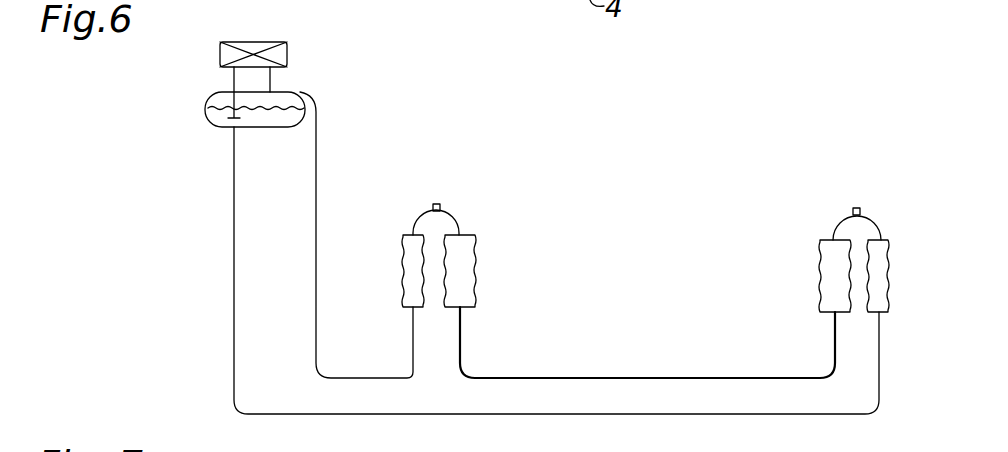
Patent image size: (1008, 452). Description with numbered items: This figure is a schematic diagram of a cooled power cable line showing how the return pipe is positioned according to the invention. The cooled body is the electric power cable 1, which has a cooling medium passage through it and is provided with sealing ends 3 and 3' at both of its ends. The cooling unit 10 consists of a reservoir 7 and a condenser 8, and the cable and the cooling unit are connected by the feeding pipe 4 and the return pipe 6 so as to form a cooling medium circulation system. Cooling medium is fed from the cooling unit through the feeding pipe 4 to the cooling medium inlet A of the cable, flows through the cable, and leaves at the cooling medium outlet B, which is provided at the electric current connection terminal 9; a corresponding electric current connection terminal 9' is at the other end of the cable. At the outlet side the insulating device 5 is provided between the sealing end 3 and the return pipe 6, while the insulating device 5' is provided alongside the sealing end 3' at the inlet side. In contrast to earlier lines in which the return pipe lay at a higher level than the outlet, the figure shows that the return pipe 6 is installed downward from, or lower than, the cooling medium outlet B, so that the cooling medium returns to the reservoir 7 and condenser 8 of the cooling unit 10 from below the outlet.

The electric power cable 1 is at (645, 378).
The sealing end 3 is at (488, 271).
The sealing end 3' is at (799, 276).
The feeding pipe 4 is at (630, 414).
The insulating device 5 is at (383, 271).
The insulating device 5' is at (893, 300).
The return pipe 6 is at (368, 378).
The reservoir 7 is at (236, 97).
The condenser 8 is at (220, 52).
The electric current connection terminal 9 is at (415, 186).
The electric current connection terminal 9' is at (855, 183).
The cooling unit 10 is at (209, 80).
The cooling medium inlet A is at (852, 212).
The cooling medium outlet B is at (442, 210).